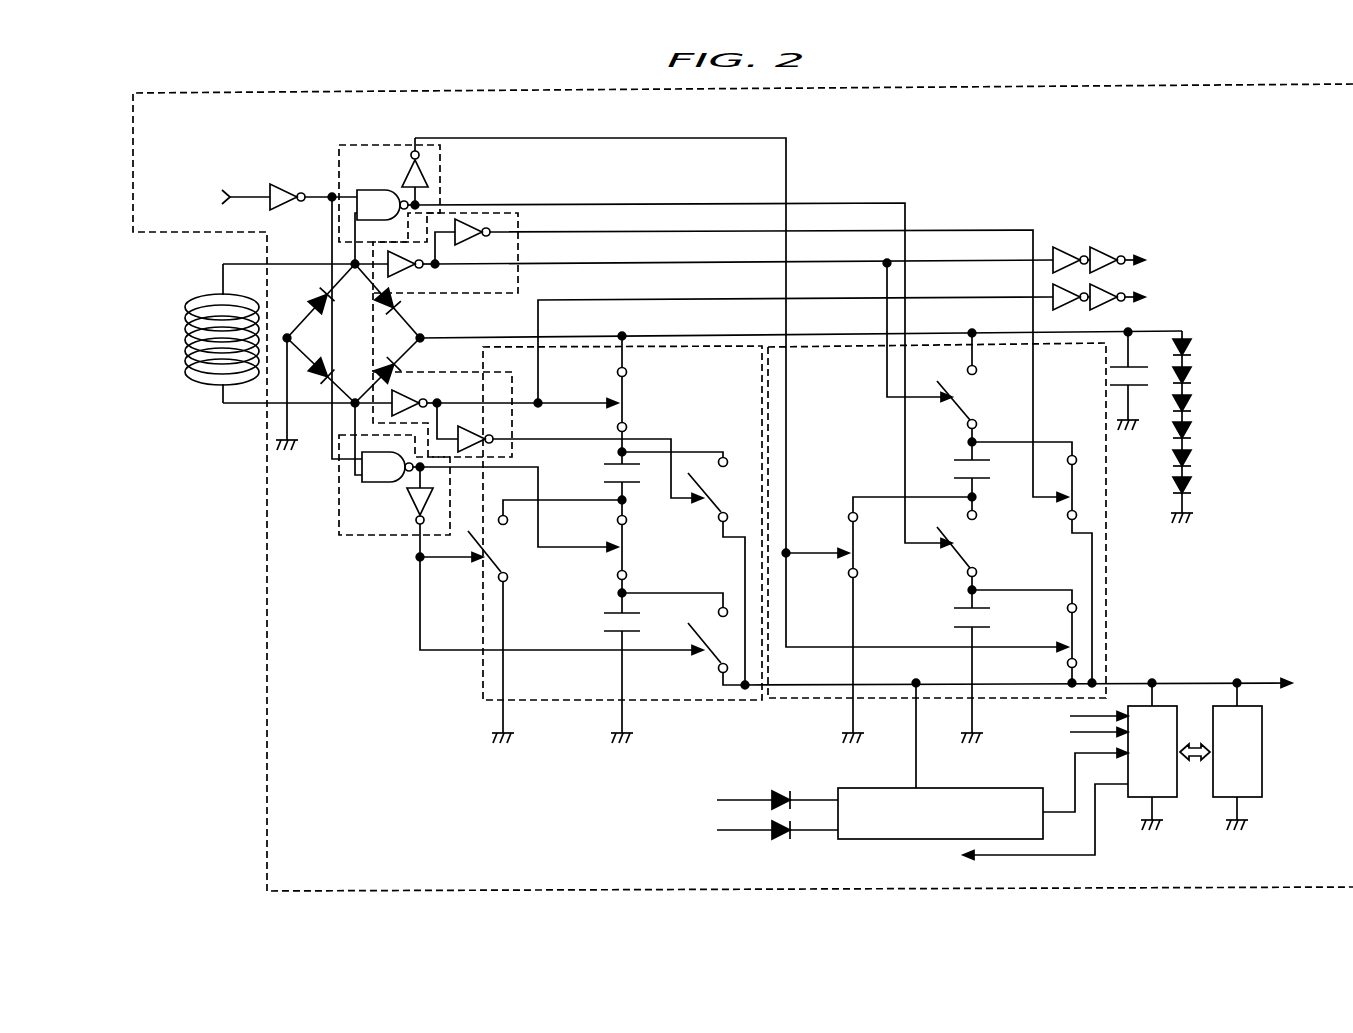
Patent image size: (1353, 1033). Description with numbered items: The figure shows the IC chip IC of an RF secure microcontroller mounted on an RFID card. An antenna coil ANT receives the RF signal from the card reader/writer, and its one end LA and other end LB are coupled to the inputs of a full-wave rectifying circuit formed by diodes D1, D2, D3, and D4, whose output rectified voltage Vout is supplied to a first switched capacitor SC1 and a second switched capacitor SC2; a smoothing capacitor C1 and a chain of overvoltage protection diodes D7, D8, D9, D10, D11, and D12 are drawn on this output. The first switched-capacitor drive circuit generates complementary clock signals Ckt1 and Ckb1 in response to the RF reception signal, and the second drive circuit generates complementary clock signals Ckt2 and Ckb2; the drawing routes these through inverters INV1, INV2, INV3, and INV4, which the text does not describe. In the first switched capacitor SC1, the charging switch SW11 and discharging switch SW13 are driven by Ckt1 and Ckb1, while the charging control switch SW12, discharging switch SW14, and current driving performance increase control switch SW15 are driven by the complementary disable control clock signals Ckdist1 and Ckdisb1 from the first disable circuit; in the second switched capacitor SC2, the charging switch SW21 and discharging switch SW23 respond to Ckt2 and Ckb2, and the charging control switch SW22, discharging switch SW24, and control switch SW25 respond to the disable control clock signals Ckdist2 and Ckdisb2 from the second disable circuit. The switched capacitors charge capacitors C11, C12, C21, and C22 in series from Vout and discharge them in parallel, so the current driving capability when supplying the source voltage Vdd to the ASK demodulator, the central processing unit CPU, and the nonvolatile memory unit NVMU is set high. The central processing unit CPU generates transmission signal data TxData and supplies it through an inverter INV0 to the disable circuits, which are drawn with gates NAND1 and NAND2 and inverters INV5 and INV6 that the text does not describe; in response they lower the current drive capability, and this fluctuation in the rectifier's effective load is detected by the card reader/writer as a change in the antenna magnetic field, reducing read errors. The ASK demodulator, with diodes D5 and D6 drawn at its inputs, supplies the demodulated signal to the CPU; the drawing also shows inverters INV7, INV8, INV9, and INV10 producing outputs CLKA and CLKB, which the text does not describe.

The IC chip IC is at (743, 487).
The antenna coil ANT is at (199, 333).
The one end of the antenna coil LA is at (497, 521).
The other end of the antenna coil LB is at (497, 633).
The full-wave rectifying circuit diode D1 is at (387, 301).
The full-wave rectifying circuit diode D2 is at (387, 370).
The full-wave rectifying circuit diode D3 is at (320, 301).
The full-wave rectifying circuit diode D4 is at (321, 370).
The transmission signal data TxData is at (642, 526).
The inverter INV0 is at (306, 183).
The NAND gate NAND1 is at (382, 215).
The inverter INV5 is at (394, 171).
The disable control clock signal Ckdisb1 is at (787, 160).
The disable control clock signal Ckdist1 is at (655, 203).
The inverter INV1 is at (421, 272).
The clock signal Ckt1 is at (655, 262).
The inverter INV2 is at (476, 242).
The complementary clock signal Ckb1 is at (655, 232).
The inverter INV3 is at (424, 395).
The clock signal Ckt2 is at (550, 402).
The inverter INV4 is at (471, 427).
The complementary clock signal Ckb2 is at (527, 439).
The output rectified voltage Vout is at (432, 337).
The NAND gate NAND2 is at (382, 456).
The disable control clock signal Ckdist2 is at (538, 505).
The inverter INV6 is at (400, 514).
The disable control clock signal Ckdisb2 is at (420, 590).
The second switched capacitor SC2 is at (740, 384).
The charging switch SW21 is at (648, 394).
The capacitor C21 is at (605, 476).
The discharging switch SW23 is at (723, 572).
The charging control switch SW22 is at (654, 546).
The capacitor C22 is at (606, 668).
The discharging switch SW24 is at (705, 642).
The current driving performance increase control switch SW25 is at (515, 630).
The first switched capacitor SC1 is at (848, 384).
The charging switch SW11 is at (976, 387).
The capacitor C11 is at (954, 469).
The discharging switch SW13 is at (1072, 551).
The charging control switch SW12 is at (982, 543).
The capacitor C12 is at (955, 666).
The discharging switch SW14 is at (1047, 644).
The current driving performance increase control switch SW15 is at (878, 628).
The inverter INV7 is at (1065, 244).
The inverter INV8 is at (1112, 244).
The inverter INV9 is at (1053, 303).
The inverter INV10 is at (1123, 305).
The clock output A CLKA is at (1107, 487).
The clock output B CLKB is at (1107, 515).
The smoothing capacitor C1 is at (1134, 381).
The overvoltage protection diode D7 is at (1196, 348).
The overvoltage protection diode D8 is at (1196, 376).
The overvoltage protection diode D9 is at (1196, 404).
The overvoltage protection diode D10 is at (1201, 431).
The overvoltage protection diode D11 is at (1201, 459).
The overvoltage protection diode D12 is at (1201, 486).
The source voltage Vdd is at (918, 772).
The central processing unit CPU is at (1165, 700).
The nonvolatile memory unit NVMU is at (1250, 700).
The diode D5 is at (805, 787).
The diode D6 is at (805, 844).